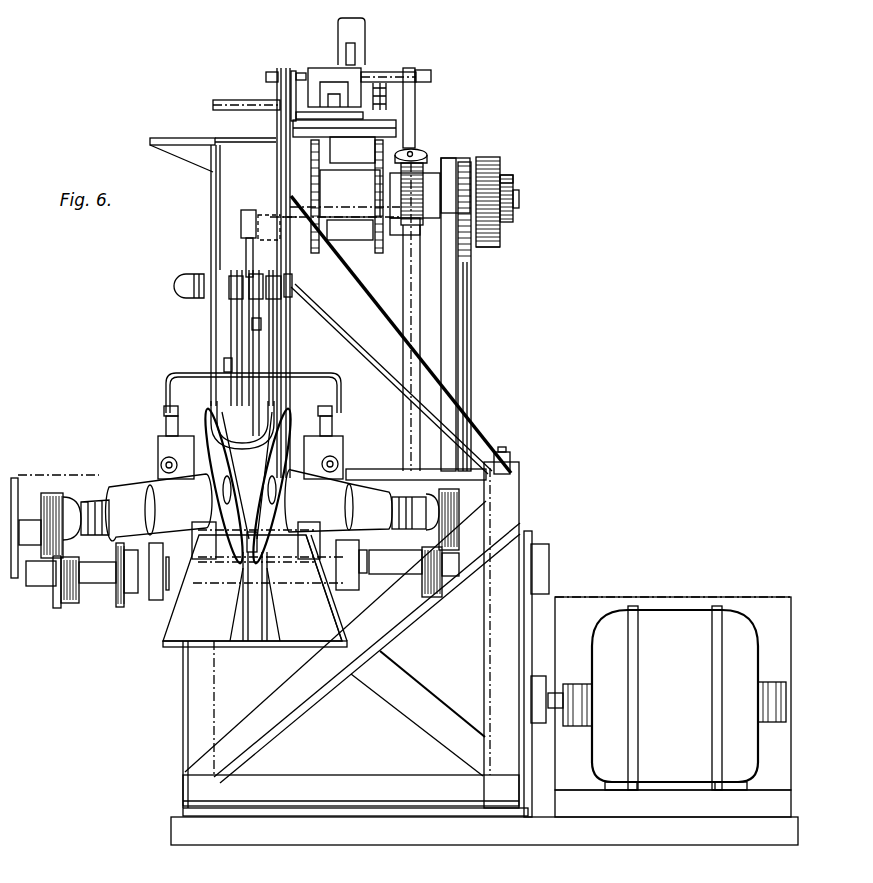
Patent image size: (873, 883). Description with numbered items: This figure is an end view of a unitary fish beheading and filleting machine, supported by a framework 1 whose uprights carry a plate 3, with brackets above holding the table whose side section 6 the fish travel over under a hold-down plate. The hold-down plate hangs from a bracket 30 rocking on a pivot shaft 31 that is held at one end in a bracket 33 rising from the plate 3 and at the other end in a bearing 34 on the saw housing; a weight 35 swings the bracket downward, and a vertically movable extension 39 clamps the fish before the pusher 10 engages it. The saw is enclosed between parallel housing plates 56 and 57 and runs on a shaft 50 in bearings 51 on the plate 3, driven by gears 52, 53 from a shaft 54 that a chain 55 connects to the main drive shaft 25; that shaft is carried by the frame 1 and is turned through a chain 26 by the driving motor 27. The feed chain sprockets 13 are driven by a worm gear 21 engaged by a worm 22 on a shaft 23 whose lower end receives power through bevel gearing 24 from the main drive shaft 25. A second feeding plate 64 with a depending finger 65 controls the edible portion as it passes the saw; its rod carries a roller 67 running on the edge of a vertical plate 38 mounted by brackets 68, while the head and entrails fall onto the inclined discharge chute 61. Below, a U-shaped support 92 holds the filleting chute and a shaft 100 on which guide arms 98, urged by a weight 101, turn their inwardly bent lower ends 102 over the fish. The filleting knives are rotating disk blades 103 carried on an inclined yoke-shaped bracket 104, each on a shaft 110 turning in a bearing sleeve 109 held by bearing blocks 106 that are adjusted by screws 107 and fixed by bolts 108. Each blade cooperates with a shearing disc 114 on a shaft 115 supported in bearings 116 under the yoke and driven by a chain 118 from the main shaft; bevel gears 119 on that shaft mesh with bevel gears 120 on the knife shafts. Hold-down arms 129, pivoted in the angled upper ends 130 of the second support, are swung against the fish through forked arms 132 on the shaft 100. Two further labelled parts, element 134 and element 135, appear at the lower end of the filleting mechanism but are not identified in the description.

The framework 1 is at (183, 704).
The plate 3 is at (385, 232).
The side section of table 6 is at (183, 132).
The pusher 10 is at (368, 120).
The sprockets 13 is at (382, 136).
The worm gear 21 is at (418, 170).
The worm 22 is at (412, 144).
The shaft 23 is at (405, 315).
The bevel gearing 24 is at (427, 606).
The main drive shaft 25 is at (542, 552).
The chain 26 is at (525, 587).
The driving motor 27 is at (640, 608).
The bracket 30 is at (315, 60).
The pivot shaft 31 is at (397, 62).
The bracket 33 is at (412, 62).
The bearing 34 is at (269, 64).
The weight 35 is at (349, 30).
The vertical plate 38 is at (372, 64).
The extension of hold-down plate 39 is at (370, 110).
The shaft 50 is at (506, 182).
The bearings 51 is at (437, 157).
The gear 52 is at (496, 170).
The gear 53 is at (463, 229).
The shaft 54 is at (510, 192).
The chain 55 is at (461, 370).
The housing plate 56 is at (284, 95).
The housing plate 57 is at (285, 119).
The inclined discharge chute 61 is at (355, 313).
The plate of second feeding device 64 is at (229, 92).
The finger 65 is at (288, 107).
The roller 67 is at (372, 98).
The brackets 68 is at (220, 185).
The U-shaped support 92 is at (203, 330).
The guide arms 98 is at (226, 291).
The shaft 100 is at (172, 280).
The weight 101 is at (237, 215).
The lower ends of guide arms 102 is at (218, 356).
The rotating disk blades 103 is at (315, 626).
The yoke-shaped bracket 104 is at (165, 378).
The bearing blocks 106 is at (155, 446).
The screws 107 is at (151, 401).
The bolts 108 is at (151, 455).
The bearing sleeves 109 is at (151, 467).
The shaft 110 is at (45, 565).
The shearing disc 114 is at (238, 624).
The shaft 115 is at (87, 566).
The bearings 116 is at (148, 555).
The chain 118 is at (110, 585).
The bevel gears 119 is at (61, 595).
The bevel gears 120 is at (41, 485).
The arms 129 is at (256, 486).
The upper ends of support arms 130 is at (200, 405).
The arms 132 is at (248, 316).
The base plate 134 is at (166, 633).
The support plate 135 is at (222, 597).